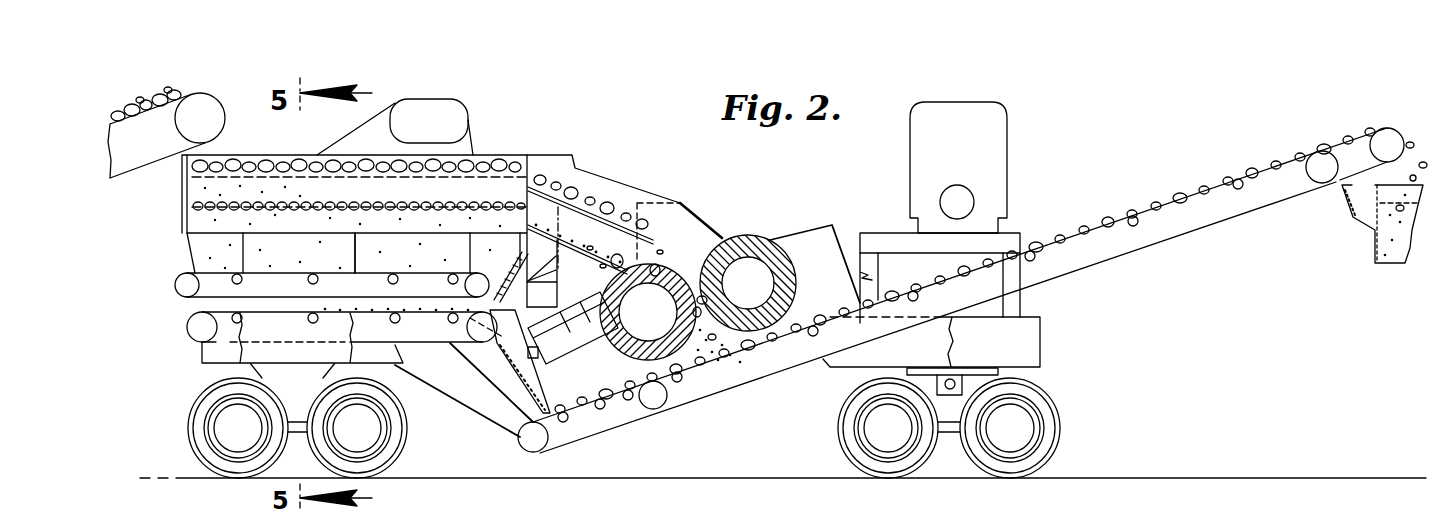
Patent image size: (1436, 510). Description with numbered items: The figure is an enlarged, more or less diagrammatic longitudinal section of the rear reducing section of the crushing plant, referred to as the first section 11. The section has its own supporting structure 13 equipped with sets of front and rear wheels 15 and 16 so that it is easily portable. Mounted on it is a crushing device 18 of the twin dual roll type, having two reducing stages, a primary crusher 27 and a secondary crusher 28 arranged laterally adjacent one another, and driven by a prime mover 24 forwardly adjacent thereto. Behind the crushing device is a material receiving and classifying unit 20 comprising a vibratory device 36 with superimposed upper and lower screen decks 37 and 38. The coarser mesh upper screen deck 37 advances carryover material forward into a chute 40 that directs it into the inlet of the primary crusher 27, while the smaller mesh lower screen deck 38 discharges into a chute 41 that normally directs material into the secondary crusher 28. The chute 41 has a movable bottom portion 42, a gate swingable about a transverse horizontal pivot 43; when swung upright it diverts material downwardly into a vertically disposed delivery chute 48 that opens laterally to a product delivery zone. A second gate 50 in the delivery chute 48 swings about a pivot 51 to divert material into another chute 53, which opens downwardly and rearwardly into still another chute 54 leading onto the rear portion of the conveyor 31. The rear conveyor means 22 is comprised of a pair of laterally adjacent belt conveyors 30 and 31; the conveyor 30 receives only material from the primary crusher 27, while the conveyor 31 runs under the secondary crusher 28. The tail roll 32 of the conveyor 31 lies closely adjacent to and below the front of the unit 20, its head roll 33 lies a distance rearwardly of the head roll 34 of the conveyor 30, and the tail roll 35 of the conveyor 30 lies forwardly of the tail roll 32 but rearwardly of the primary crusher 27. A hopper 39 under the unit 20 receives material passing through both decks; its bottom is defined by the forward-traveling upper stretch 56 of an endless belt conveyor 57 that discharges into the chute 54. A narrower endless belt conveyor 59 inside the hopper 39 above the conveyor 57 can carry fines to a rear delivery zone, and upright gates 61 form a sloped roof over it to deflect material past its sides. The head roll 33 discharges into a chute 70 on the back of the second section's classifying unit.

The first section 11 is at (690, 143).
The supporting structure 13 is at (447, 387).
The front wheels 15 is at (1068, 444).
The rear wheels 16 is at (298, 456).
The crushing device 18 is at (727, 222).
The material receiving and classifying unit 20 is at (505, 130).
The rear conveyor means 22 is at (1130, 214).
The prime mover 24 is at (1003, 143).
The primary crusher 27 is at (812, 225).
The secondary crusher 28 is at (743, 240).
The belt conveyor 30 is at (777, 370).
The belt conveyor 31 is at (613, 427).
The tail roll 32 is at (518, 442).
The head roll 33 is at (1318, 155).
The head roll 34 is at (1388, 142).
The tail roll 35 is at (667, 398).
The vibratory device 36 is at (183, 224).
The upper screen deck 37 is at (275, 175).
The lower screen deck 38 is at (305, 203).
The hopper 39 is at (188, 255).
The chute 40 is at (557, 188).
The chute 41 is at (607, 257).
The movable bottom portion 42 is at (543, 217).
The pivot 43 is at (600, 222).
The delivery chute 48 is at (548, 295).
The second gate 50 is at (558, 273).
The pivot 51 is at (557, 283).
The chute 53 is at (522, 245).
The chute 54 is at (515, 383).
The upper stretch 56 is at (200, 309).
The endless belt conveyor 57 is at (186, 342).
The endless belt conveyor 59 is at (179, 290).
The gates 61 is at (373, 264).
The chute 70 is at (1348, 212).